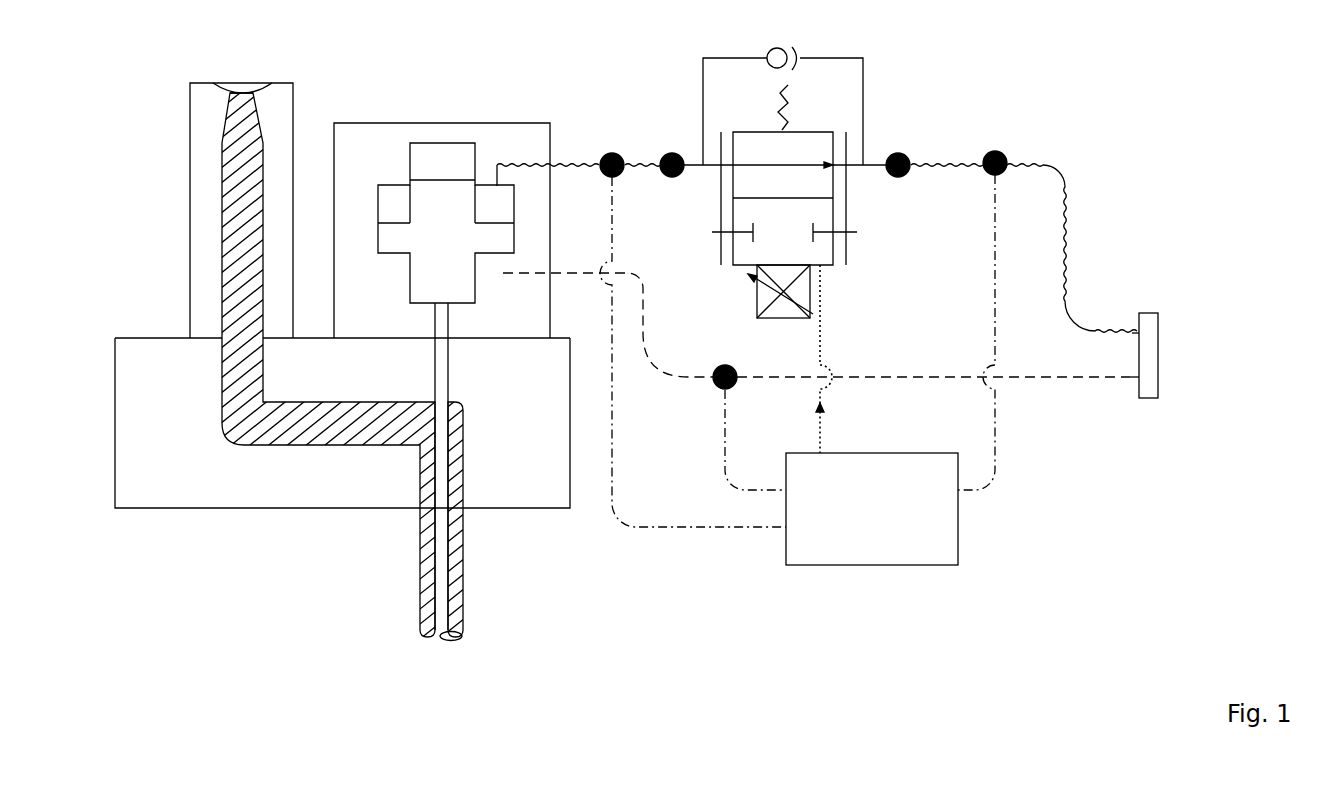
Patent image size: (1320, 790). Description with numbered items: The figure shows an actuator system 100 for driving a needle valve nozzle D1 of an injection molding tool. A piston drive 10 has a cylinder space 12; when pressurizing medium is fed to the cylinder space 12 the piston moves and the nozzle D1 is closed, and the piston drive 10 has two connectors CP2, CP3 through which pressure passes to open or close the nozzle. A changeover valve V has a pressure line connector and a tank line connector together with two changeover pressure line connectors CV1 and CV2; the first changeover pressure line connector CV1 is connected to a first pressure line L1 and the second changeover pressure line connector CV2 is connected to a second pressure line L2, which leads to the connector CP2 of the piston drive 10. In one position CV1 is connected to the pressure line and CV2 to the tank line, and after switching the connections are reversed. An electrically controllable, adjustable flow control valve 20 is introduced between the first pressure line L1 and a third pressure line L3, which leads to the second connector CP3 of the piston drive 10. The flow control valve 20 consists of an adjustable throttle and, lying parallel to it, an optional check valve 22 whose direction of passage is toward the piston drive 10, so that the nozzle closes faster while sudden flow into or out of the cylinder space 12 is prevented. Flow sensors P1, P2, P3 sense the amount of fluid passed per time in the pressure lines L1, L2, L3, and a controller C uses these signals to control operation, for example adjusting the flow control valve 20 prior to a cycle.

The actuator system 100 is at (1071, 120).
The piston drive 10 is at (416, 118).
The cylinder space 12 is at (379, 184).
The flow control valve 20 is at (783, 188).
The check valve 22 is at (773, 44).
The controller C is at (872, 509).
The changeover valve V is at (1168, 401).
The flow sensor P1 is at (1002, 149).
The flow sensor P2 is at (722, 364).
The flow sensor P3 is at (608, 146).
The first pressure line L1 is at (1072, 237).
The second pressure line L2 is at (915, 364).
The third pressure line L3 is at (585, 178).
The connector CP2 is at (497, 267).
The second connector CP3 is at (496, 178).
The first changeover pressure line connector CV1 is at (1132, 323).
The second changeover pressure line connector CV2 is at (1128, 387).
The needle valve nozzle D1 is at (470, 628).